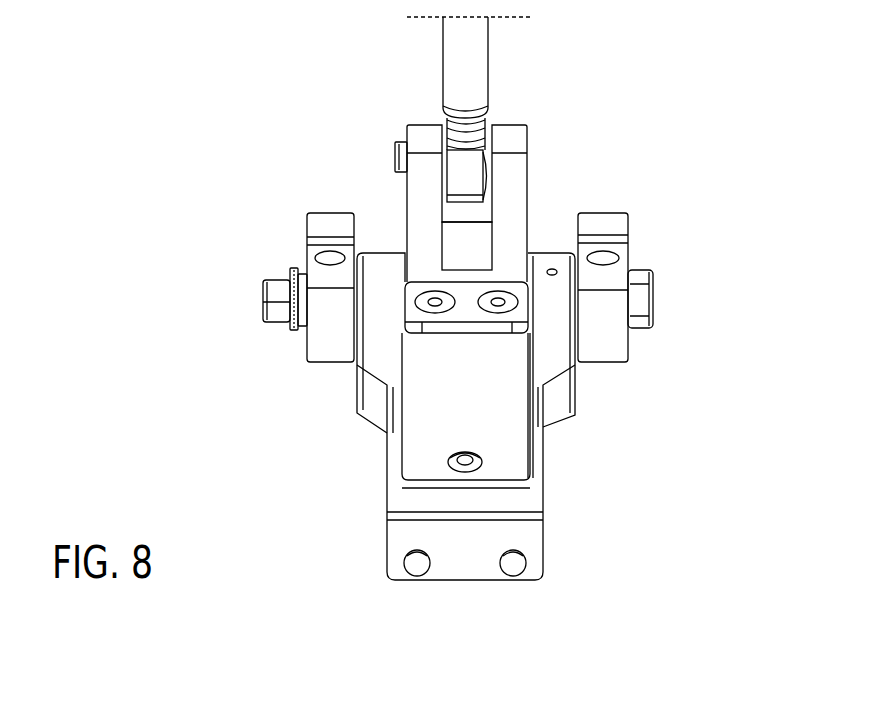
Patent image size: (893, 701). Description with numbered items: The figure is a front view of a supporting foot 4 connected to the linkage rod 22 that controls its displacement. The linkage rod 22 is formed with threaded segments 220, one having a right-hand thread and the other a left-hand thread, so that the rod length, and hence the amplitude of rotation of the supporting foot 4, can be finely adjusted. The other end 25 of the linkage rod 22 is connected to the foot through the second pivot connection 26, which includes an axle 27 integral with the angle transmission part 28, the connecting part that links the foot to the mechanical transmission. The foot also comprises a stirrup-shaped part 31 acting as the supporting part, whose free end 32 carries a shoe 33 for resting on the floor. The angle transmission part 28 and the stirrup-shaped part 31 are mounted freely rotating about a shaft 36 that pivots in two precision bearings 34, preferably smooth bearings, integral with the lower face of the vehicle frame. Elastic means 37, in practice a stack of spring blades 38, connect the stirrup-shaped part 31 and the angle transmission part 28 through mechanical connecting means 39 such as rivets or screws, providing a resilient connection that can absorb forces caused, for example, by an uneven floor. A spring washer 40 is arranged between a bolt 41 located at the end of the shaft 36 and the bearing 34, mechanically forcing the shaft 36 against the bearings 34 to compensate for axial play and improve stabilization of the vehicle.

The supporting foot 4 is at (675, 438).
The linkage rod 22 is at (480, 70).
The segment 220 is at (515, 107).
The other end 25 is at (457, 115).
The second pivot connection 26 is at (470, 167).
The axle 27 is at (397, 155).
The angle transmission part 28 is at (517, 183).
The stirrup-shaped part 31 is at (563, 395).
The free end 32 is at (440, 517).
The shoe 33 is at (473, 568).
The precision bearing 34 is at (622, 233).
The shaft 36 is at (648, 300).
The elastic means 37 is at (540, 437).
The spring blades 38 is at (427, 412).
The mechanical connecting means 39 is at (428, 290).
The spring washer 40 is at (295, 327).
The bolt 41 is at (277, 313).